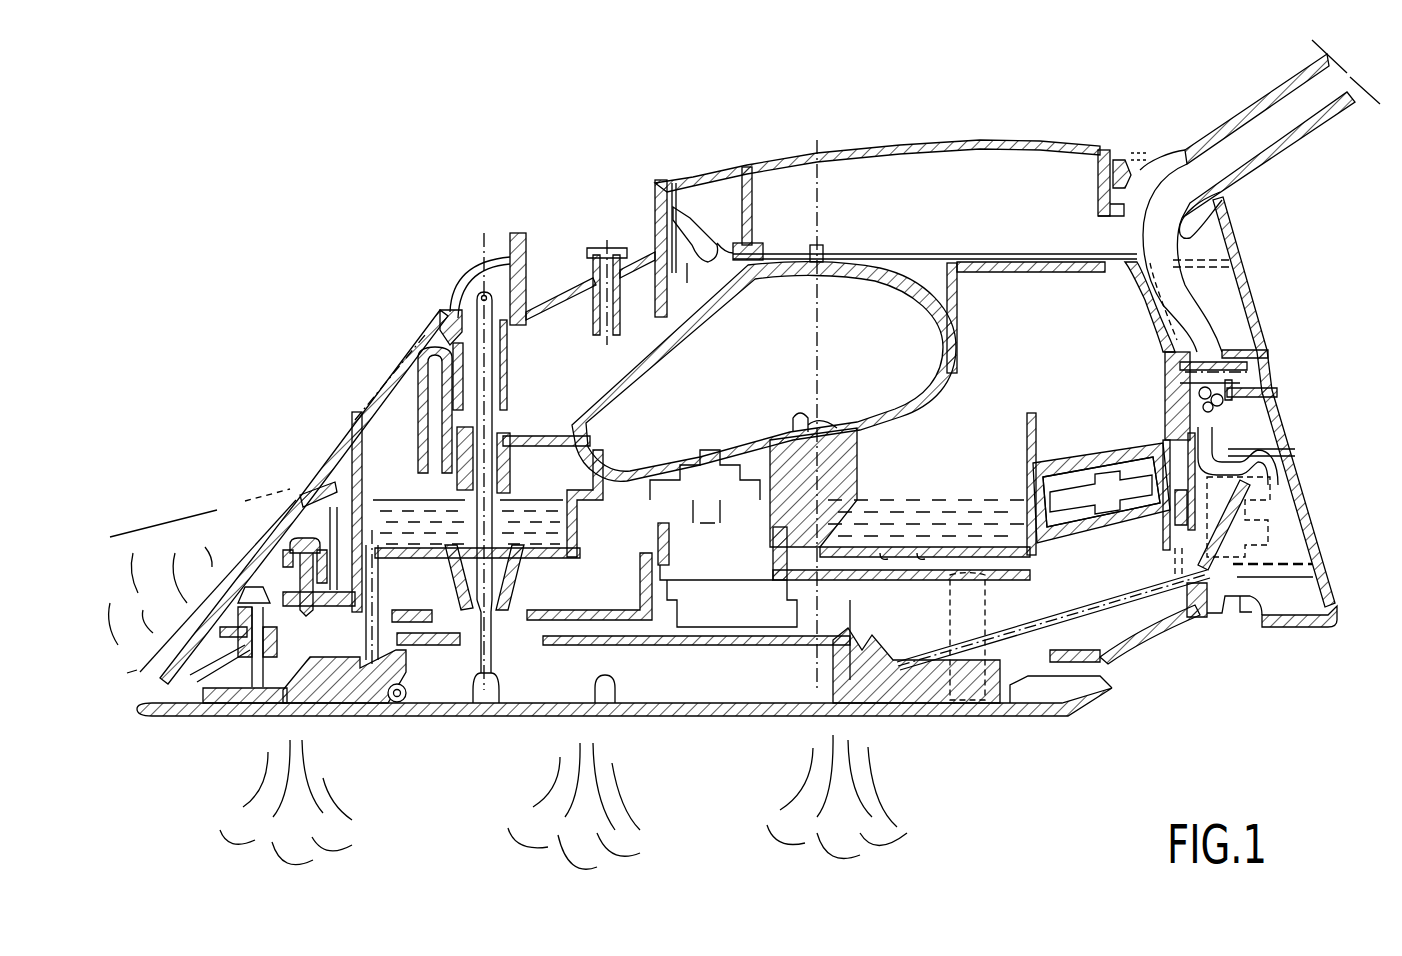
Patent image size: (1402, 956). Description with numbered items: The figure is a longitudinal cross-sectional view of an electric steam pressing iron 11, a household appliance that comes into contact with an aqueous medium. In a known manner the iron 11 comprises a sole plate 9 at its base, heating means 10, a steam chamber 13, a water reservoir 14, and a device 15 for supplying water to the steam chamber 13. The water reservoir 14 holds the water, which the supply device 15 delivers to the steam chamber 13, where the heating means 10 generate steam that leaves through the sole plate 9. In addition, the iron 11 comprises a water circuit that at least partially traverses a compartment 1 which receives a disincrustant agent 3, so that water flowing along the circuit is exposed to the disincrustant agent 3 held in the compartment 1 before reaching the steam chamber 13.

The compartment 1 is at (1101, 464).
The disincrustant agent 3 is at (1107, 487).
The sole plate 9 is at (640, 718).
The heating means 10 is at (397, 713).
The pressing iron 11 is at (760, 362).
The steam chamber 13 is at (725, 668).
The water reservoir 14 is at (933, 517).
The device for supplying water 15 is at (500, 717).